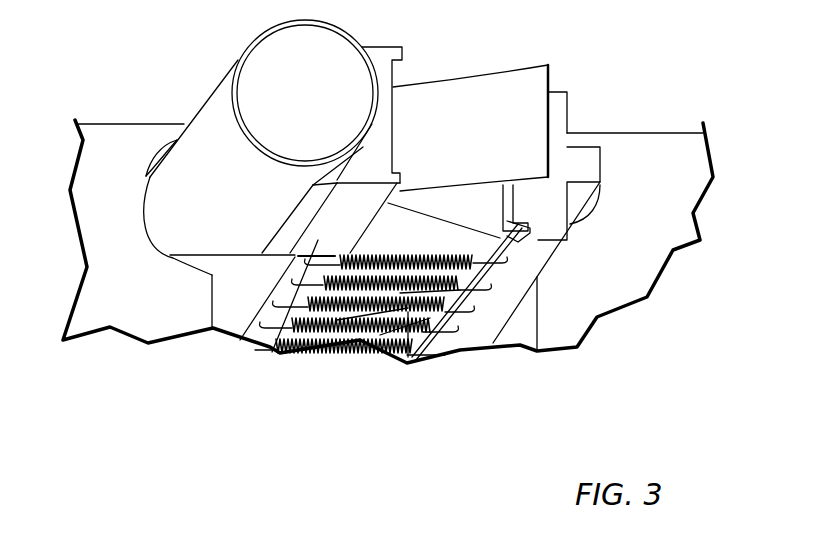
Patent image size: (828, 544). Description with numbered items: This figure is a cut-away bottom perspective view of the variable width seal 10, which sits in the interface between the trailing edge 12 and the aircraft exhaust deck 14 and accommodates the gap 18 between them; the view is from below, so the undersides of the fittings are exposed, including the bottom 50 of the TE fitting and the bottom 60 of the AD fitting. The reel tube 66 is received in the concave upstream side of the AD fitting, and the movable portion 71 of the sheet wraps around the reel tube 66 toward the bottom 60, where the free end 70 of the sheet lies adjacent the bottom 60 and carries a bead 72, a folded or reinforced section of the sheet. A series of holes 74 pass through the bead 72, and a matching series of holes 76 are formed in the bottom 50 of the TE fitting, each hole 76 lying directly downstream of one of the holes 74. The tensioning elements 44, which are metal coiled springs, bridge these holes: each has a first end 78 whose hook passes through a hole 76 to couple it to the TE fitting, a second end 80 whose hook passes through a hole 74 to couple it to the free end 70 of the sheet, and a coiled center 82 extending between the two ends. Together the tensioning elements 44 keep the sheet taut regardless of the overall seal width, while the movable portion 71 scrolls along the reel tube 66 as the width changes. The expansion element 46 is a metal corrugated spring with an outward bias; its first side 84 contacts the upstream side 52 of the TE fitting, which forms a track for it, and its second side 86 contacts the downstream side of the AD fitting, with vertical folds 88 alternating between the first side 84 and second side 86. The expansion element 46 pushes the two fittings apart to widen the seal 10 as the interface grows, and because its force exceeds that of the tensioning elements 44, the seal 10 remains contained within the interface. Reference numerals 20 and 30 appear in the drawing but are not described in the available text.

The variable width seal 10 is at (646, 80).
The trailing edge 12 is at (678, 192).
The aircraft exhaust deck 14 is at (92, 292).
The gap 18 is at (160, 157).
The top wall 20 is at (632, 132).
The side wall 30 is at (149, 123).
The tensioning elements 44 is at (416, 243).
The expansion element 46 is at (447, 97).
The bottom of TE fitting 50 is at (543, 243).
The upstream side of TE fitting 52 is at (513, 203).
The bottom of AD fitting 60 is at (376, 193).
The reel tube 66 is at (266, 40).
The free end of sheet 70 is at (226, 272).
The movable portion of sheet 71 is at (163, 230).
The bead 72 is at (267, 313).
The holes in bead 74 is at (295, 283).
The holes in TE fitting bottom 76 is at (487, 290).
The first end of tensioning element 78 is at (492, 268).
The second end of tensioning element 80 is at (327, 254).
The coiled center 82 is at (462, 303).
The first side of expansion element 84 is at (510, 187).
The second side of expansion element 86 is at (388, 196).
The folds 88 is at (483, 240).